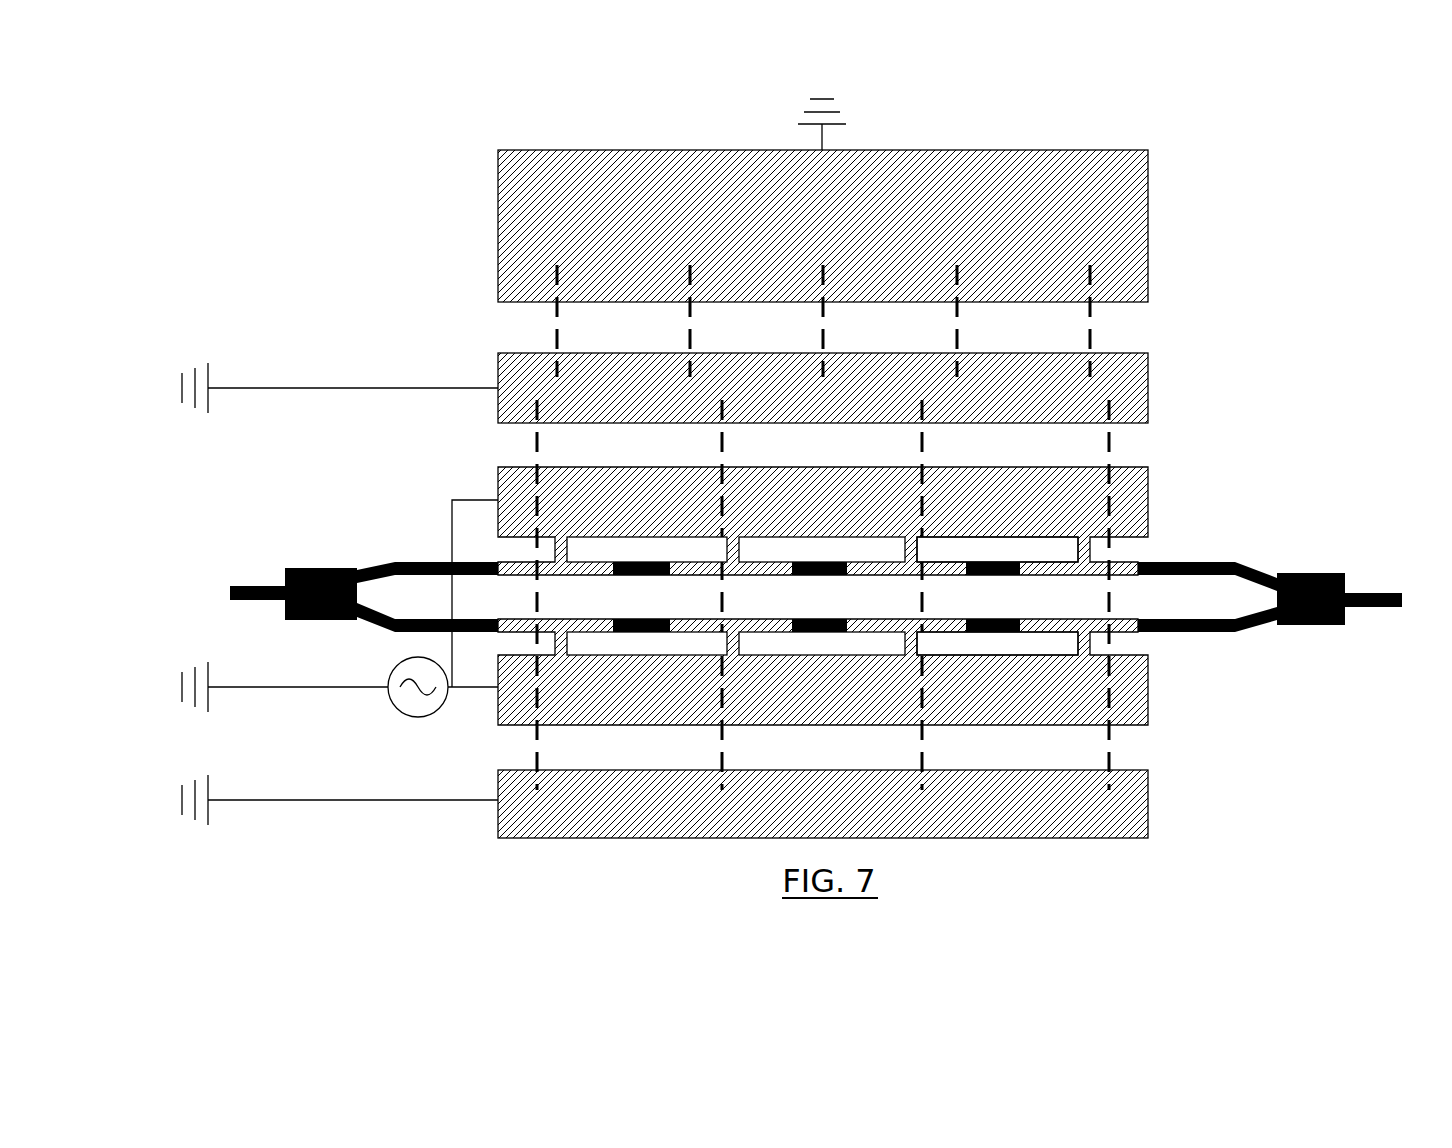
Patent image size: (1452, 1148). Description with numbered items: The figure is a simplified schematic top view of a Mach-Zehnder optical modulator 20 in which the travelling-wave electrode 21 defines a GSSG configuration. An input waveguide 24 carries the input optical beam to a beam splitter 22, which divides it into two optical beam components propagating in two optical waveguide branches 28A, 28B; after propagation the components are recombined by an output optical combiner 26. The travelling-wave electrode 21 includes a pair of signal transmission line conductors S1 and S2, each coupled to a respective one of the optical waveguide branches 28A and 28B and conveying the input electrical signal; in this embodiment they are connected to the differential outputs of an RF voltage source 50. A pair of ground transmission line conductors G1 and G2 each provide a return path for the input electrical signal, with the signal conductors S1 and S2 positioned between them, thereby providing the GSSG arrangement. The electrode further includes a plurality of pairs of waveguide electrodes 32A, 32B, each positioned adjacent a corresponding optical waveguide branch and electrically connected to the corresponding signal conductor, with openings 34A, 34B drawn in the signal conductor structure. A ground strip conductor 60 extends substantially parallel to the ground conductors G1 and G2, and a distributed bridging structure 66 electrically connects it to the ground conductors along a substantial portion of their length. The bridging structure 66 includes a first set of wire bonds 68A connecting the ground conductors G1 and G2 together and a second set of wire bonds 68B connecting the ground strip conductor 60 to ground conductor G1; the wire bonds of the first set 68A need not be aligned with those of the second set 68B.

The Mach-Zehnder optical modulator 20 is at (1285, 221).
The travelling-wave electrode 21 is at (470, 358).
The beam splitter 22 is at (343, 565).
The input waveguide 24 is at (262, 607).
The output optical combiner 26 is at (1318, 625).
The optical waveguide branch 28A is at (1210, 562).
The optical waveguide branch 28B is at (1195, 632).
The waveguide electrode 32A is at (958, 577).
The waveguide electrode 32B is at (1040, 619).
The opening 34A is at (1085, 545).
The opening 34B is at (1073, 642).
The RF voltage source 50 is at (400, 712).
The ground strip conductor 60 is at (1133, 258).
The distributed bridging structure 66 is at (1140, 454).
The first set of wire bonds 68A is at (921, 452).
The second set of wire bonds 68B is at (557, 330).
The ground transmission line conductor G1 is at (498, 405).
The ground transmission line conductor G2 is at (1133, 806).
The signal transmission line conductor S1 is at (592, 478).
The signal transmission line conductor S2 is at (508, 712).